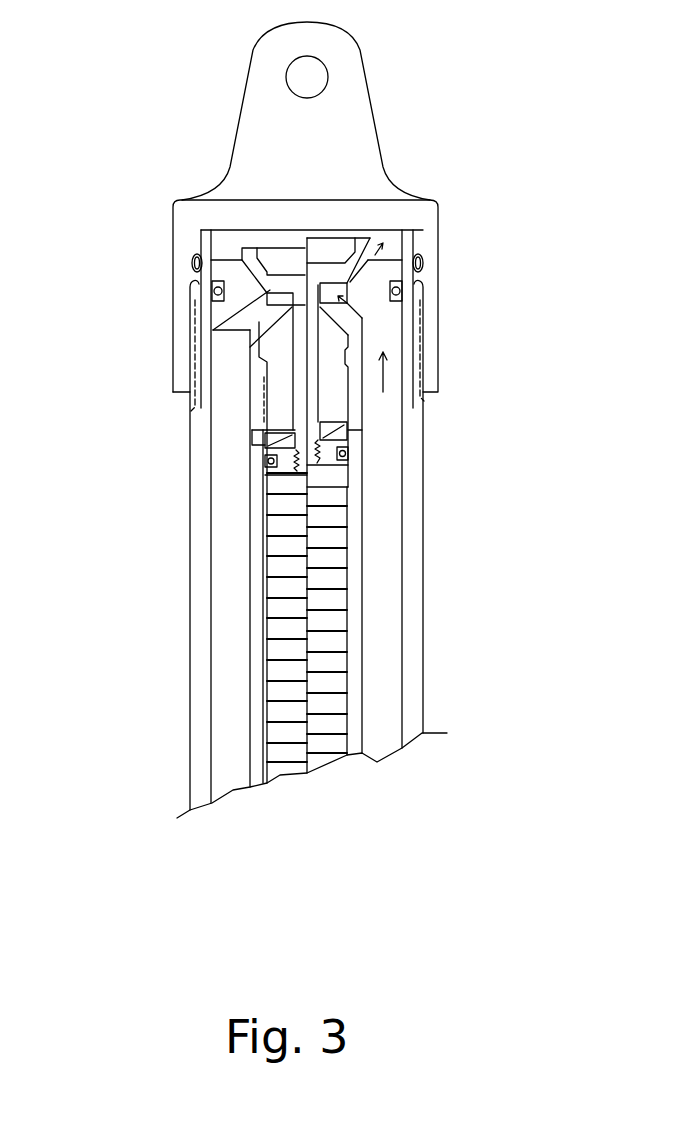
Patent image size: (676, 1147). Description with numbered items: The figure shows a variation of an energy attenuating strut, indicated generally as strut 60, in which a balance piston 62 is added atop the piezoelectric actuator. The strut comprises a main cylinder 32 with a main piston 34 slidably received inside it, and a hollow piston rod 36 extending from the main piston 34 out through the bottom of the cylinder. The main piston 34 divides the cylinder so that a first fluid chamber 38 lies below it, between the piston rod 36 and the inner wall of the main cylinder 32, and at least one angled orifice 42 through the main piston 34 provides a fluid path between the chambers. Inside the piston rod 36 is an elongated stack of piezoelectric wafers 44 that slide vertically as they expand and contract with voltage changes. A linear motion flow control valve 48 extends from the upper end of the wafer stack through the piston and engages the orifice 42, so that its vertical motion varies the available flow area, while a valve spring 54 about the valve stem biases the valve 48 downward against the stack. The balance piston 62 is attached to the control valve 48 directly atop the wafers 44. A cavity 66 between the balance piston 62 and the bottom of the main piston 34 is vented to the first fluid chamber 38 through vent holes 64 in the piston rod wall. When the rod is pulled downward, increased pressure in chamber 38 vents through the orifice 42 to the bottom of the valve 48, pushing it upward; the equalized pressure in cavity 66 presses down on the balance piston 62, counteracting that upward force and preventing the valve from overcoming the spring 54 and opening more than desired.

The energy attenuating strut 60 is at (537, 94).
The main cylinder 32 is at (190, 692).
The main piston 34 is at (426, 303).
The piston rod 36 is at (384, 640).
The first fluid chamber 38 is at (383, 560).
The orifice 42 is at (262, 312).
The piezoelectric wafers 44 is at (263, 565).
The flow control valve 48 is at (220, 251).
The valve spring 54 is at (332, 426).
The balance piston 62 is at (368, 466).
The vent holes 64 is at (230, 445).
The cavity 66 is at (292, 432).